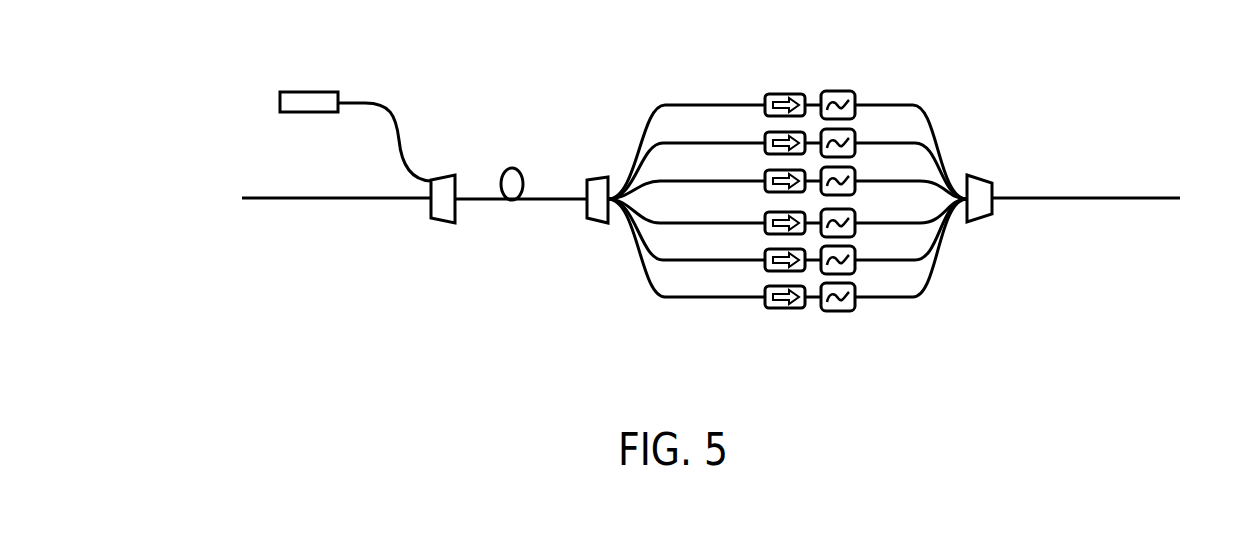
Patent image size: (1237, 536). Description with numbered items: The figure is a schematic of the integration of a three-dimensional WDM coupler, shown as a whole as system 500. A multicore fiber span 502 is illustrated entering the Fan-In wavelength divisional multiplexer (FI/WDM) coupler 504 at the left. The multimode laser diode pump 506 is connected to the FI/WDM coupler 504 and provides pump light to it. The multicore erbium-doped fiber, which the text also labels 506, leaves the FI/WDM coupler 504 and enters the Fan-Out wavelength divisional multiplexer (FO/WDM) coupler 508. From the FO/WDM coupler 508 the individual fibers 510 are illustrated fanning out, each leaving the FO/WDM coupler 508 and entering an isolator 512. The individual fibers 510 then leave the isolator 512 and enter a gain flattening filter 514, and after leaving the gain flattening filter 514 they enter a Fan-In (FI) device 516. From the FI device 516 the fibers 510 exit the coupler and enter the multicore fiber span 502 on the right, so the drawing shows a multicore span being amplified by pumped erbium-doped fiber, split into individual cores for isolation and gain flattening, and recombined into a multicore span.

The multi-core fiber amplifier system 500 is at (1025, 36).
The multicore fiber span 502 is at (262, 197).
The Fan-In wavelength divisional multiplexer (FI/WDM) coupler 504 is at (428, 212).
The multimode laser diode pump 506 is at (280, 97).
The Fan-Out wavelength divisional multiplexer (FO/WDM) coupler 508 is at (603, 177).
The individual fibers 510 is at (707, 105).
The isolator 512 is at (765, 310).
The gain flattening filter 514 is at (837, 312).
The Fan-In (FI) device 516 is at (968, 223).